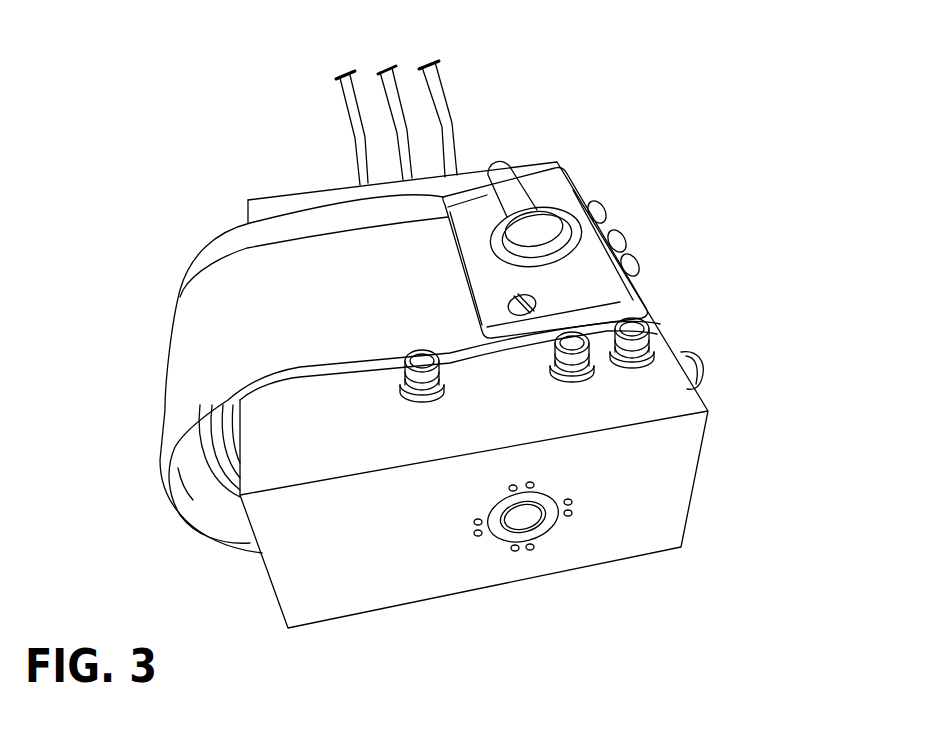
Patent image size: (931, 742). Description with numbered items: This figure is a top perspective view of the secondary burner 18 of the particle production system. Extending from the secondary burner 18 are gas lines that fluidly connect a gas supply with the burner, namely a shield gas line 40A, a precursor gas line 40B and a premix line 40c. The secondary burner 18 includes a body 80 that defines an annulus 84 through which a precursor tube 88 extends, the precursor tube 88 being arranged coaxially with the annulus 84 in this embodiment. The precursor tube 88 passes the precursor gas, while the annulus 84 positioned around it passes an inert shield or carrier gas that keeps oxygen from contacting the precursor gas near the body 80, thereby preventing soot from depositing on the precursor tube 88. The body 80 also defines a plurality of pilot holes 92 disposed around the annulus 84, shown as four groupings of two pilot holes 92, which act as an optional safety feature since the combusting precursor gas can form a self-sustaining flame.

The secondary burner 18 is at (668, 220).
The body 80 is at (690, 403).
The premix line 40c is at (348, 127).
The precursor gas line 40B is at (390, 108).
The shield gas line 40A is at (435, 110).
The annulus 84 is at (553, 525).
The precursor tube 88 is at (537, 530).
The pilot holes 92 is at (517, 485).